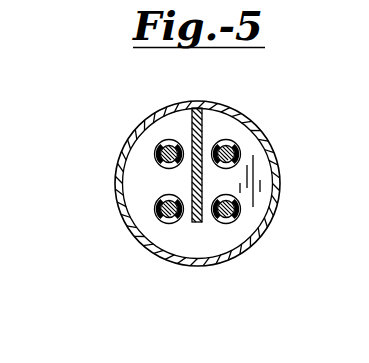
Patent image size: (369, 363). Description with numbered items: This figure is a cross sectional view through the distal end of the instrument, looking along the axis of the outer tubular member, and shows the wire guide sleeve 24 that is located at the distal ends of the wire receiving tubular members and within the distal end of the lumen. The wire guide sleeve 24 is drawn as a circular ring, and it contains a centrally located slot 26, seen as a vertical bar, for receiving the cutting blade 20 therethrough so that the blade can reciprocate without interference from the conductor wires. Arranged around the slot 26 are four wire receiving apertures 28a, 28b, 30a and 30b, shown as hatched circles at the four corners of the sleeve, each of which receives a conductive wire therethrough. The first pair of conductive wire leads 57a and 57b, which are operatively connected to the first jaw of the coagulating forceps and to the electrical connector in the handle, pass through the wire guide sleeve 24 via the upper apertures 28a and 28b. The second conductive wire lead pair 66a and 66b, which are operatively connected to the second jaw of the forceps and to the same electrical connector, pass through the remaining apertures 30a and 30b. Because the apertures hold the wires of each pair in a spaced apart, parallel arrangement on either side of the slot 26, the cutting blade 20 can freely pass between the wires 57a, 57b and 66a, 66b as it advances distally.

The cutting blade 20 is at (218, 104).
The wire guide sleeve 24 is at (142, 212).
The slot 26 is at (190, 150).
The wire receiving aperture 28a is at (162, 147).
The wire receiving aperture 28b is at (238, 148).
The wire receiving aperture 30a is at (162, 224).
The wire receiving aperture 30b is at (223, 225).
The conductive wire lead 57a is at (160, 163).
The conductive wire lead 57b is at (237, 169).
The conductive wire lead 66a is at (159, 222).
The conductive wire lead 66b is at (241, 209).